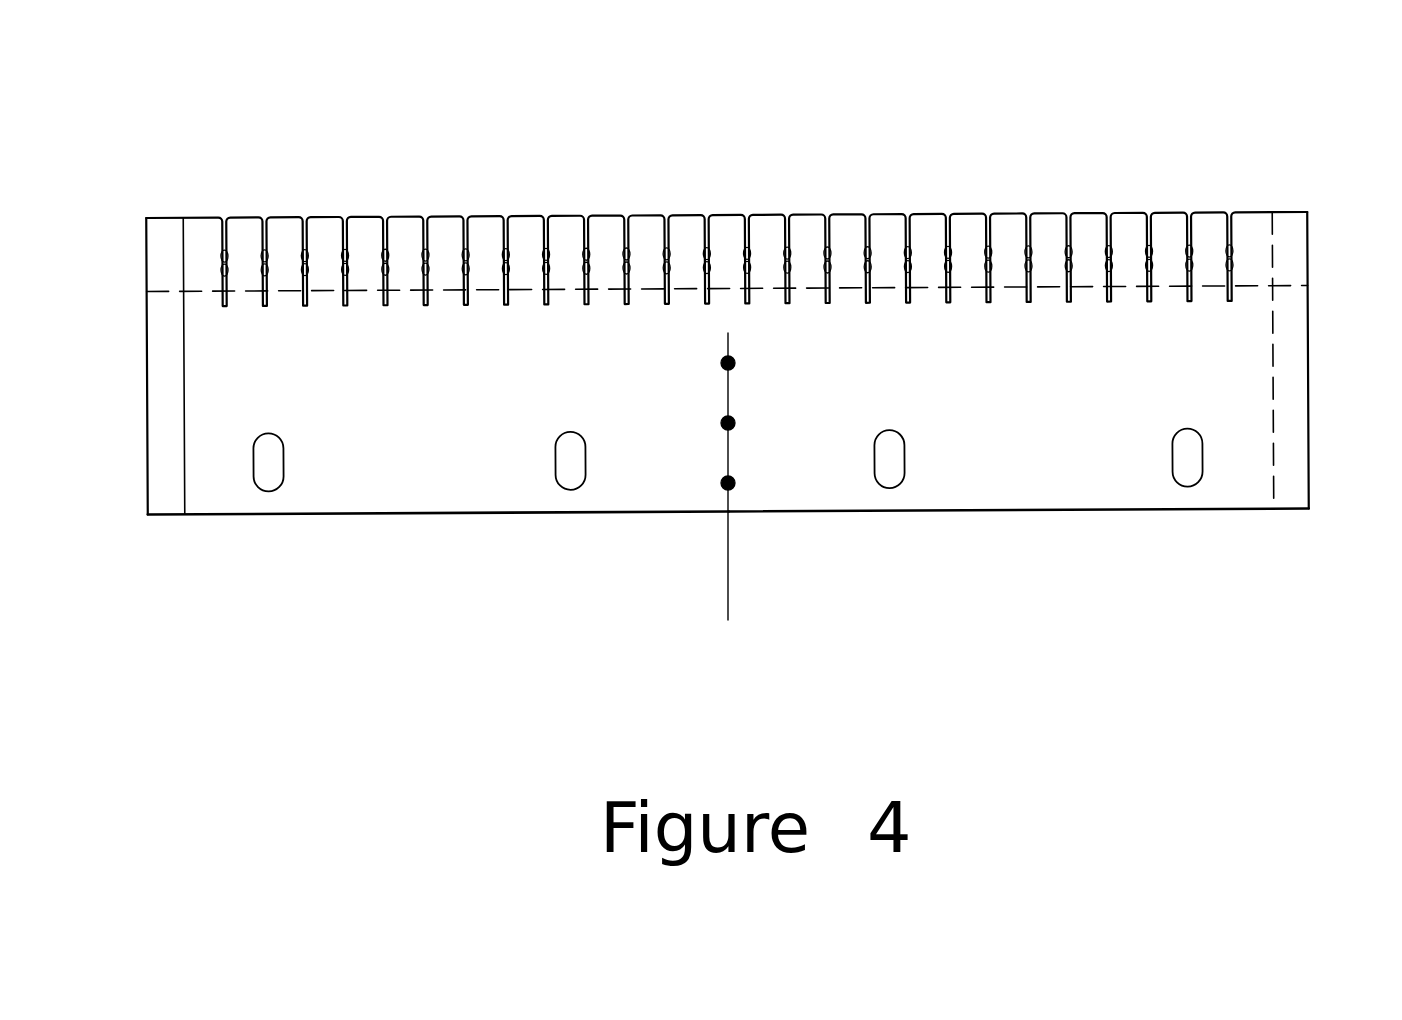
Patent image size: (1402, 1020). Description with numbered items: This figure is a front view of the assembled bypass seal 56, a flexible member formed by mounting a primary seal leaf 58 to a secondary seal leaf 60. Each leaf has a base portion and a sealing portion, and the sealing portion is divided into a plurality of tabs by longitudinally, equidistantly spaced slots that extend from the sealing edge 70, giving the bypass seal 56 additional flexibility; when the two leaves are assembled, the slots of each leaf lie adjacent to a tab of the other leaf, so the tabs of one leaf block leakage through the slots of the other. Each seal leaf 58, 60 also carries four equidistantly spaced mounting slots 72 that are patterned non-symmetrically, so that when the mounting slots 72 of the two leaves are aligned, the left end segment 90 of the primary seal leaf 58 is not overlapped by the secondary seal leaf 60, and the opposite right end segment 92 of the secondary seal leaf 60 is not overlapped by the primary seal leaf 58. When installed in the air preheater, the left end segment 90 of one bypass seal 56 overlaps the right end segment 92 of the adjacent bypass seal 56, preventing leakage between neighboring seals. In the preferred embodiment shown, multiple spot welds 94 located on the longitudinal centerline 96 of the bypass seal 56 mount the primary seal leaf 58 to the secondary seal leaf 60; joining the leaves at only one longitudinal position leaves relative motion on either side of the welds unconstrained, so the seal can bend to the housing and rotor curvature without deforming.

The bypass seal 56 is at (405, 110).
The primary seal leaf 58 is at (173, 360).
The secondary seal leaf 60 is at (1282, 352).
The sealing edge 70 is at (680, 218).
The mounting slots 72 is at (888, 447).
The left end segment 90 is at (173, 500).
The right end segment 92 is at (1282, 493).
The spot welds 94 is at (728, 423).
The longitudinal centerline 96 is at (730, 597).